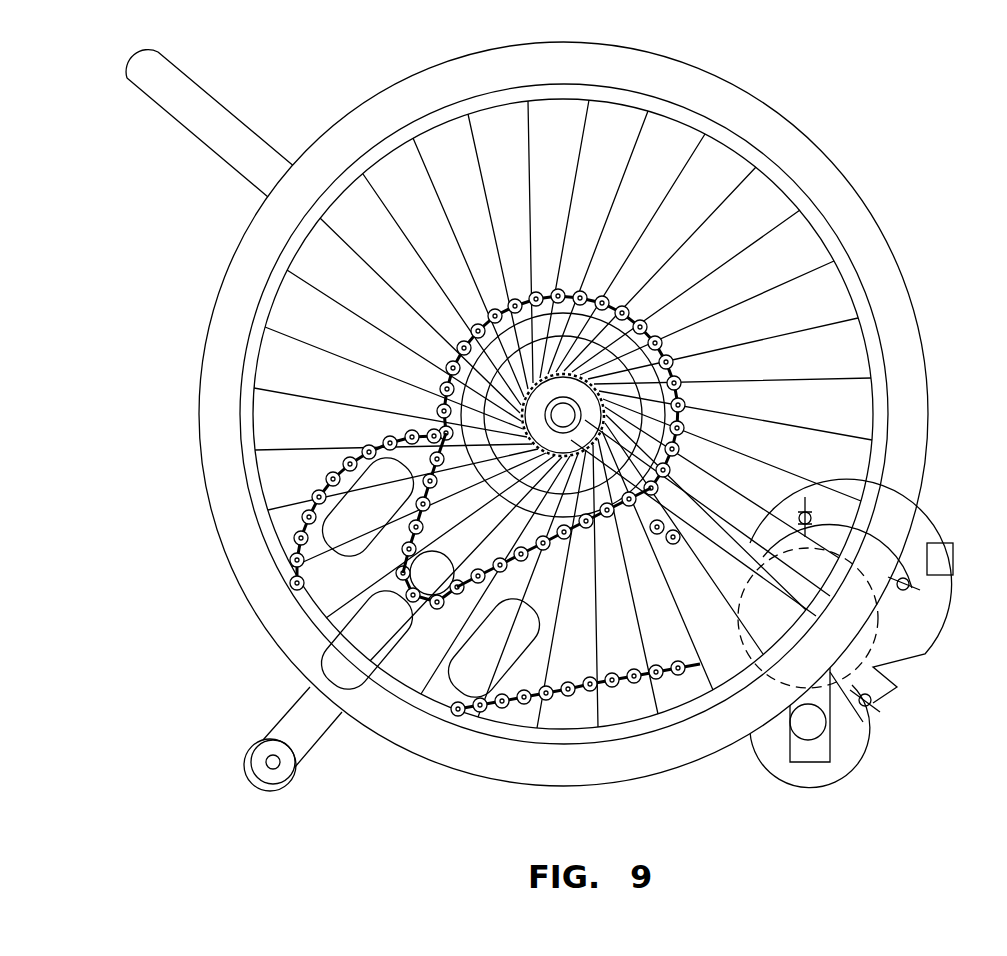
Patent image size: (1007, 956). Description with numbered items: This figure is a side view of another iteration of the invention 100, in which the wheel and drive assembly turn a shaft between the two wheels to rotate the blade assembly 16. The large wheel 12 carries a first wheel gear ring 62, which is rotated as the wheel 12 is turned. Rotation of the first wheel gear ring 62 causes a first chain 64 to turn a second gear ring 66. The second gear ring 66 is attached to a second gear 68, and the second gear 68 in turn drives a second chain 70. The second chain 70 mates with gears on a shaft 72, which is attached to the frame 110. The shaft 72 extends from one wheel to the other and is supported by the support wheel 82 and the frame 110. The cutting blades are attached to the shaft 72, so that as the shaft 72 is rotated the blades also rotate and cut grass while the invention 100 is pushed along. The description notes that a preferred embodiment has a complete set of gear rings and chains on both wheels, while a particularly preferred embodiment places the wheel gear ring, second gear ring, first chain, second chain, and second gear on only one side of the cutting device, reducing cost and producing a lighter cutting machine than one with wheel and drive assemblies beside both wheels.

The invention 100 is at (838, 82).
The wheel 12 is at (245, 265).
The frame 110 is at (213, 118).
The first wheel gear ring 62 is at (600, 325).
The first chain 64 is at (398, 453).
The second gear ring 66 is at (432, 588).
The second gear 68 is at (345, 568).
The second chain 70 is at (560, 695).
The shaft 72 is at (920, 630).
The blade assembly 16 is at (900, 648).
The support wheel 82 is at (820, 770).